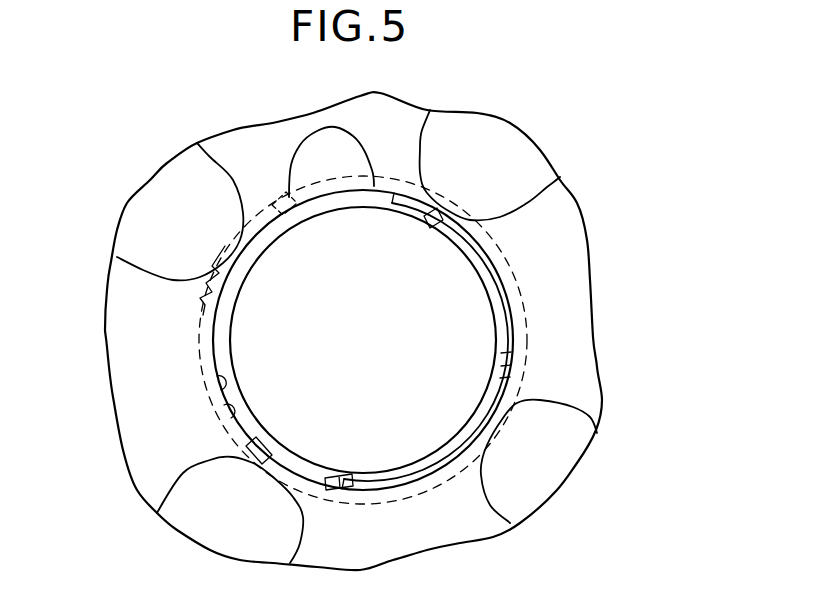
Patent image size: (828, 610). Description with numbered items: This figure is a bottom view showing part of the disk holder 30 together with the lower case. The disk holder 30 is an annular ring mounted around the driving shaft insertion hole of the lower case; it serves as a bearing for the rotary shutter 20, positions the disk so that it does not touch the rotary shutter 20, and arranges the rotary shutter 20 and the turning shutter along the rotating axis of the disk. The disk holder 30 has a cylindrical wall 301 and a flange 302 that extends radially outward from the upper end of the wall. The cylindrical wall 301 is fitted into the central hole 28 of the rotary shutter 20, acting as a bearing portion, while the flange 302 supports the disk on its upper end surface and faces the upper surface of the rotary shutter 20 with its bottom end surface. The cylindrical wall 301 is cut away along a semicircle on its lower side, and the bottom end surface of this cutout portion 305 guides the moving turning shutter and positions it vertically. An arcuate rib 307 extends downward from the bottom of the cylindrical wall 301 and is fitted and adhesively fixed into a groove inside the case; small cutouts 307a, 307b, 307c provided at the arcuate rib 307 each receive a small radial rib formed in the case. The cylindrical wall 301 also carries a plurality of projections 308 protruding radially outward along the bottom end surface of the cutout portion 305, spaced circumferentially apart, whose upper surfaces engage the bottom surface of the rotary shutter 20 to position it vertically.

The rotary shutter 20 is at (577, 322).
The central hole 28 is at (220, 377).
The disk holder 30 is at (512, 242).
The cylindrical wall 301 is at (233, 420).
The flange 302 is at (515, 285).
The cutout portion 305 is at (228, 343).
The arcuate rib 307 is at (489, 282).
The small cutout 307a is at (350, 477).
The small cutout 307b is at (510, 370).
The small cutout 307c is at (427, 223).
The projection 308 is at (210, 290).